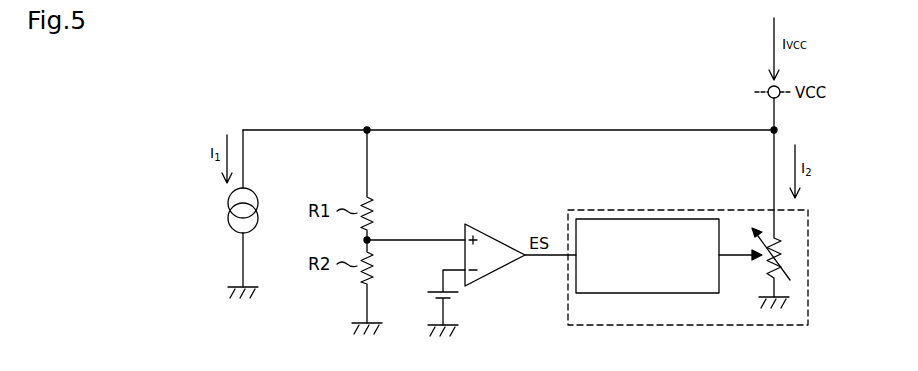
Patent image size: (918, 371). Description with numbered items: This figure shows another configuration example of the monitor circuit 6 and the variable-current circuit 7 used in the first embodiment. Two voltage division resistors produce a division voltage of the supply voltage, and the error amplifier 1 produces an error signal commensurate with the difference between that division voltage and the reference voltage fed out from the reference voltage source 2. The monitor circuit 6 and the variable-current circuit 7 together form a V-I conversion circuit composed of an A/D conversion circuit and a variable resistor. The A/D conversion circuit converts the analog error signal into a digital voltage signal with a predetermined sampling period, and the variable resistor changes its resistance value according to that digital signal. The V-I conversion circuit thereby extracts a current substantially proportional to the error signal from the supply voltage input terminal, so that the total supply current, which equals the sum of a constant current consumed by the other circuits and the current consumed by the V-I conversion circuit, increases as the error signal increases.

The error amplifier 1 is at (493, 233).
The reference voltage source 2 is at (423, 295).
The monitor circuit 6 is at (688, 227).
The variable-current circuit 7 is at (697, 209).